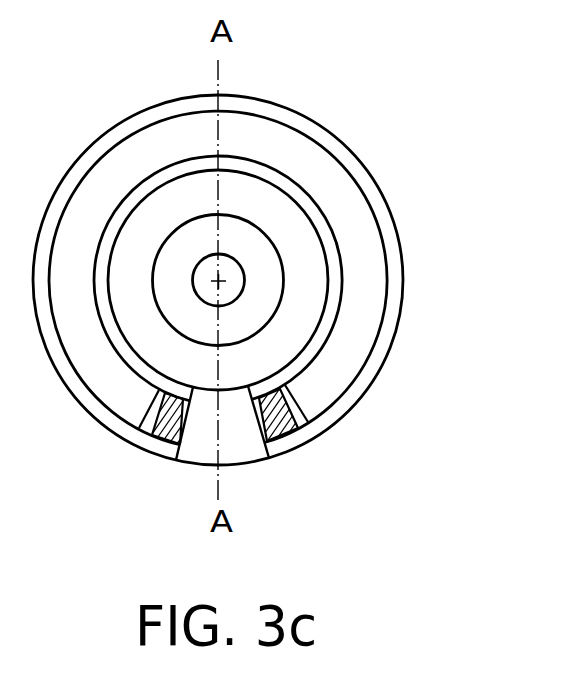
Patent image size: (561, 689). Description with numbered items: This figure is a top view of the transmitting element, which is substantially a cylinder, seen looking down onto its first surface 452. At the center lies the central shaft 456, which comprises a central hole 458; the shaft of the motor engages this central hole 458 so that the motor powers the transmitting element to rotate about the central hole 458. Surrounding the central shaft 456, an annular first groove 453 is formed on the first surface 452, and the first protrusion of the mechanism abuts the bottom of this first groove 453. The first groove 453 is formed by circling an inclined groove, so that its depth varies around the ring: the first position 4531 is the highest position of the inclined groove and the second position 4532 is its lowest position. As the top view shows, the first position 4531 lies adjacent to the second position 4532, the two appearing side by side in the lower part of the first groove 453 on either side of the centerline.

The first surface 452 is at (377, 362).
The first groove 453 is at (304, 308).
The first position 4531 is at (283, 438).
The second position 4532 is at (160, 441).
The central shaft 456 is at (253, 248).
The central hole 458 is at (354, 270).